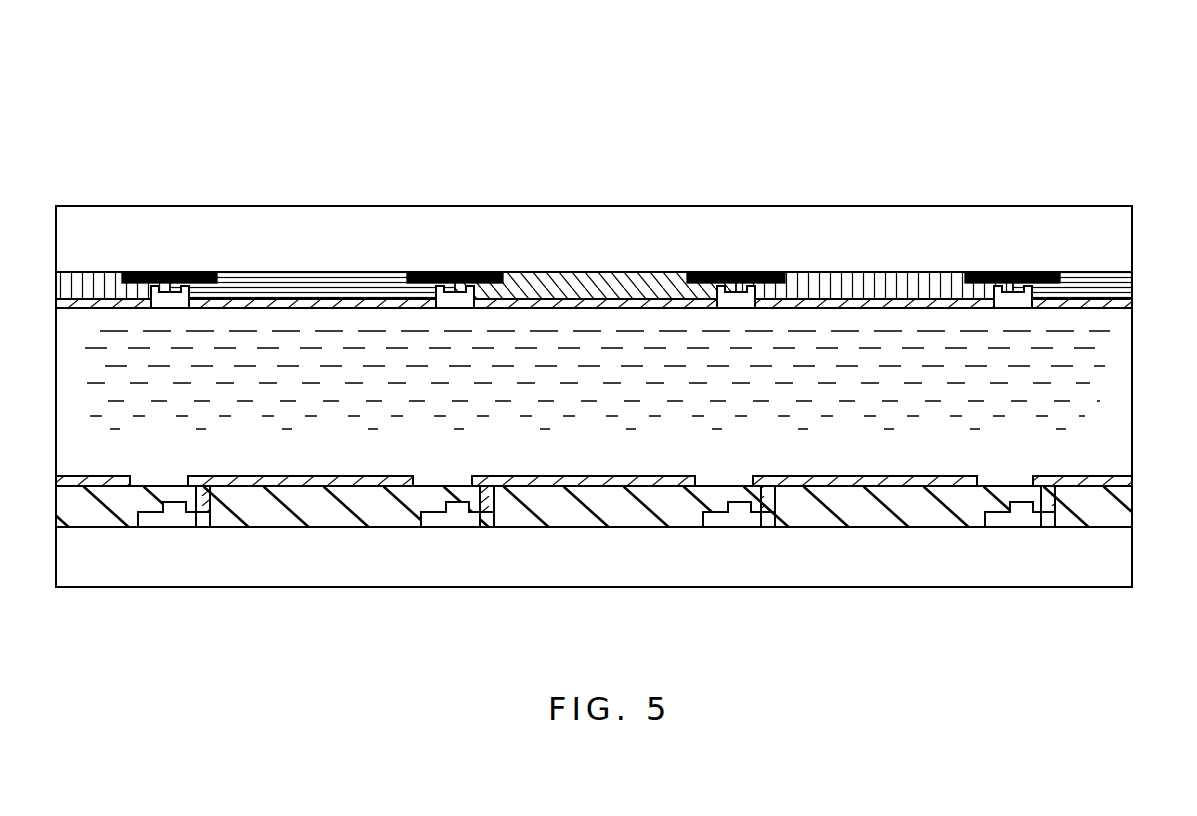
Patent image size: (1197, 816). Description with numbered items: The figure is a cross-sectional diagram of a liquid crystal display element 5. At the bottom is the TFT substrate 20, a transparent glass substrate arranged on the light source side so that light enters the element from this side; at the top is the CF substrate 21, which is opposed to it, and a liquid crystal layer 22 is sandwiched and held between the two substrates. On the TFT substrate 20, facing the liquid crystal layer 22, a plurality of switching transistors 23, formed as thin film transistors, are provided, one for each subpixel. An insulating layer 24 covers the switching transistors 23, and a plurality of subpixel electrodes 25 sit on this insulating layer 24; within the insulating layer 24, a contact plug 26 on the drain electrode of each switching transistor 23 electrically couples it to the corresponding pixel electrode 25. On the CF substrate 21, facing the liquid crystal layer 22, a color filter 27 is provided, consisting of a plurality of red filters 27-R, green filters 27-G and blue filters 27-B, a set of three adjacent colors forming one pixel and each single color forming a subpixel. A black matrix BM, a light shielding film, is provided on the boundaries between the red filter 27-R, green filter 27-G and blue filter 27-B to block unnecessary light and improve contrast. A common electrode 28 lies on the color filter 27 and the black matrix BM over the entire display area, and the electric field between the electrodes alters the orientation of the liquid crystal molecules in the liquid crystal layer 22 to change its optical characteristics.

The liquid crystal display element 5 is at (1054, 90).
The TFT substrate 20 is at (1130, 562).
The CF substrate 21 is at (1130, 241).
The liquid crystal layer 22 is at (1120, 371).
The switching transistor 23 is at (723, 520).
The insulating layer 24 is at (1130, 509).
The subpixel electrode 25 is at (863, 488).
The contact plug 26 is at (777, 494).
The color filter 27 is at (594, 197).
The red filter 27-R is at (283, 283).
The green filter 27-G is at (595, 224).
The blue filter 27-B is at (838, 283).
The common electrode 28 is at (1130, 303).
The black matrix BM is at (1011, 283).